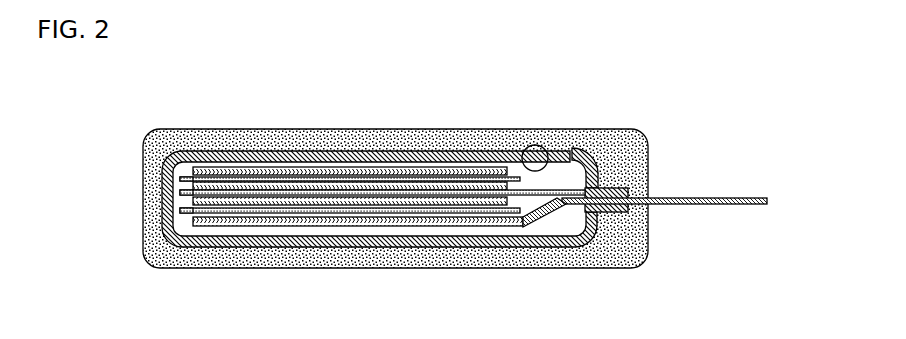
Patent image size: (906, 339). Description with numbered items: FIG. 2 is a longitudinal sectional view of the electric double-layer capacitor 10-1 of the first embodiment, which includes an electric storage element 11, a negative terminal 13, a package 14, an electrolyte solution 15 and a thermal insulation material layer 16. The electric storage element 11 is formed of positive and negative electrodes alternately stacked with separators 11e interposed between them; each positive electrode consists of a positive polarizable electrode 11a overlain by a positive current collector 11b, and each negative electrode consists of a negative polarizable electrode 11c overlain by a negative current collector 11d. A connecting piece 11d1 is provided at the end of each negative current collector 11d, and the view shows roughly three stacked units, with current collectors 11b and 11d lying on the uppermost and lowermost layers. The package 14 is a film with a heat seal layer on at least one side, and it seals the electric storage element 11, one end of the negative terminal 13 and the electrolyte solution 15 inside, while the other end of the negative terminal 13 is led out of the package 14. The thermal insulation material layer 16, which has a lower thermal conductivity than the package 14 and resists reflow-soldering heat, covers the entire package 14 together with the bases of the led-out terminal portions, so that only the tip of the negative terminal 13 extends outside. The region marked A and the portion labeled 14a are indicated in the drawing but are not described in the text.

The electric double-layer capacitor 10-1 is at (184, 124).
The electric storage element 11 is at (382, 202).
The positive polarizable electrode 11a is at (251, 170).
The positive current collector 11b is at (287, 177).
The negative polarizable electrode 11c is at (324, 184).
The negative current collector 11d is at (362, 190).
The connecting piece 11d1 is at (549, 195).
The separator 11e is at (403, 195).
The negative terminal 13 is at (718, 198).
The package 14 is at (502, 151).
The case terminal portion 14a is at (611, 188).
The electrolyte solution 15 is at (568, 170).
The thermal insulation material layer 16 is at (455, 142).
The detail region A is at (537, 145).